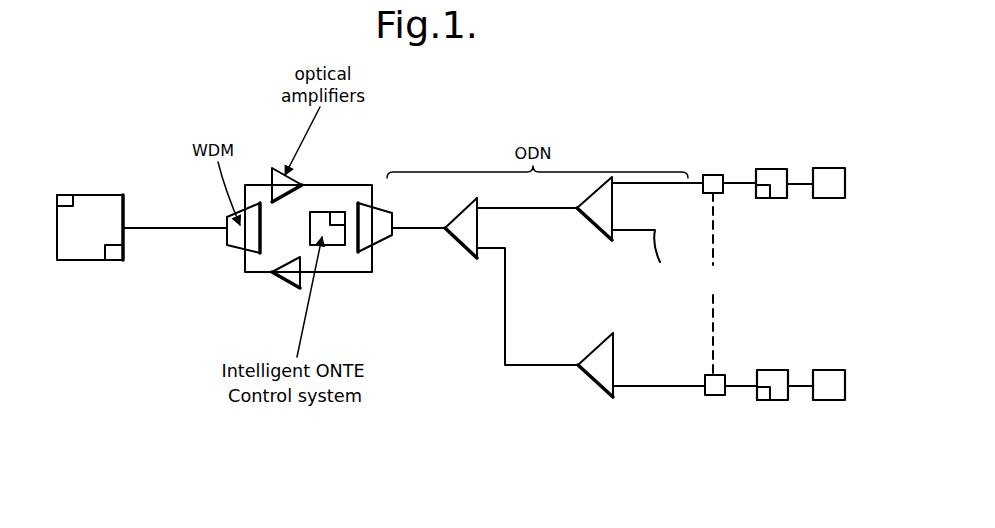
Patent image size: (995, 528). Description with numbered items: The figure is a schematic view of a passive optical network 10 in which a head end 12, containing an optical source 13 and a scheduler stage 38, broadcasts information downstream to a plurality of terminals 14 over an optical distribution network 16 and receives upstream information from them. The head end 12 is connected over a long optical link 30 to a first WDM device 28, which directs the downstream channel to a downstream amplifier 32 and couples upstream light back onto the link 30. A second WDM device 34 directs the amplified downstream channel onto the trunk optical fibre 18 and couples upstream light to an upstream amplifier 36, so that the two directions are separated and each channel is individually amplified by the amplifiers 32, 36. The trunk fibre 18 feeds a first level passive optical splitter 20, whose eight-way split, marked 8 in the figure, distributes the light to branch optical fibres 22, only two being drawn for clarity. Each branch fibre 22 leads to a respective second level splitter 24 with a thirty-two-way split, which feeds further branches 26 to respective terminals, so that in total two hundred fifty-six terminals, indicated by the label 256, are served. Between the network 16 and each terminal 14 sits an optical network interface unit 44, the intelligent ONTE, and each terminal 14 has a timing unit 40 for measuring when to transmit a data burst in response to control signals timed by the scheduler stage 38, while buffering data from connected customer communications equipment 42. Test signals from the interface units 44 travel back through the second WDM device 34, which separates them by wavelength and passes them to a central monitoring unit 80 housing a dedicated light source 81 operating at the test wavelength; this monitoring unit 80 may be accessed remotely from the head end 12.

The splitter output side 8 is at (484, 228).
The passive optical network 10 is at (506, 405).
The head end 12 is at (112, 195).
The optical source 13 is at (110, 262).
The terminal 14 is at (788, 198).
The optical distribution network 16 is at (583, 122).
The trunk optical fibre 18 is at (402, 233).
The first level passive optical splitter 20 is at (462, 250).
The branch optical fibre 22 is at (525, 213).
The second level splitter 24 is at (598, 225).
The further branch 26 is at (678, 184).
The first WDM device 28 is at (228, 245).
The optical link 30 is at (163, 228).
The downstream amplifier 32 is at (279, 165).
The second WDM device 34 is at (395, 212).
The upstream amplifier 36 is at (276, 283).
The scheduler stage 38 is at (66, 195).
The timing unit 40 is at (760, 198).
The communications equipment 42 is at (828, 168).
The optical network interface unit 44 is at (700, 178).
The central monitoring unit 80 is at (333, 240).
The dedicated light source 81 is at (337, 212).
The control link between nodes 256 is at (713, 284).